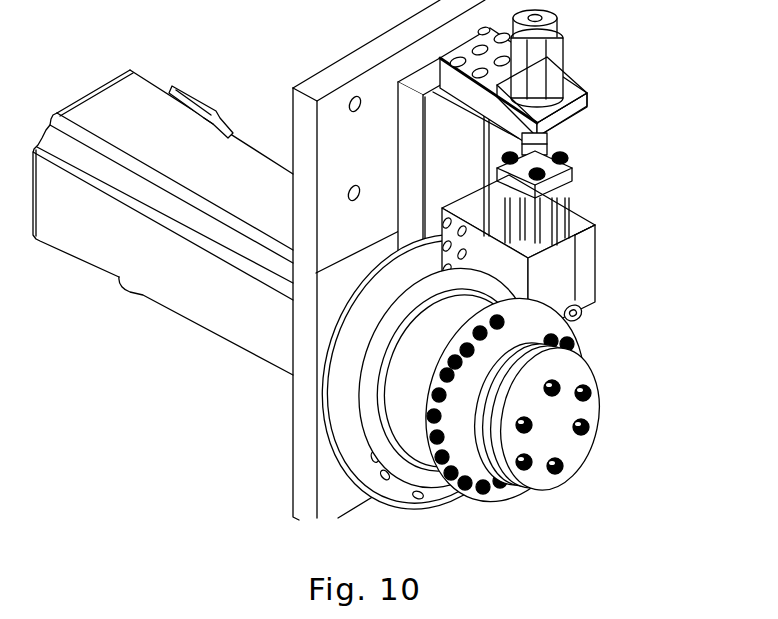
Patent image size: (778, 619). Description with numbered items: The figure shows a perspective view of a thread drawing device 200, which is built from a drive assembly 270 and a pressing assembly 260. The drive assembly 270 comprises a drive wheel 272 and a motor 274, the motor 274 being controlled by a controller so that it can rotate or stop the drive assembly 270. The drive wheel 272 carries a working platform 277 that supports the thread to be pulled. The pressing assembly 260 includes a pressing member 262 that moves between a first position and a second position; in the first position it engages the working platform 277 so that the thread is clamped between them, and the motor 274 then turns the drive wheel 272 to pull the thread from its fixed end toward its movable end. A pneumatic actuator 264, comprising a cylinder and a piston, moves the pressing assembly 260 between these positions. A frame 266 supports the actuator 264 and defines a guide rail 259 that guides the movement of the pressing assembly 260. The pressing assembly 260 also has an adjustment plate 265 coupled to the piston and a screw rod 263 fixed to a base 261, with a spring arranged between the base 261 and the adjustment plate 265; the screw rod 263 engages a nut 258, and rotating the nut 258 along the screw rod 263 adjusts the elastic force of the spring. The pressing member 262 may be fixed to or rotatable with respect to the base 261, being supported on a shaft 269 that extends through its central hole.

The thread drawing device 200 is at (360, 269).
The motor 274 is at (222, 118).
The nut 258 is at (568, 154).
The guide rail 259 is at (440, 283).
The pressing assembly 260 is at (540, 172).
The base 261 is at (560, 278).
The pressing member 262 is at (531, 255).
The screw rod 263 is at (570, 208).
The actuator 264 is at (552, 52).
The adjustment plate 265 is at (484, 173).
The frame 266 is at (443, 188).
The shaft 269 is at (580, 310).
The drive assembly 270 is at (432, 372).
The drive wheel 272 is at (551, 430).
The working platform 277 is at (540, 367).